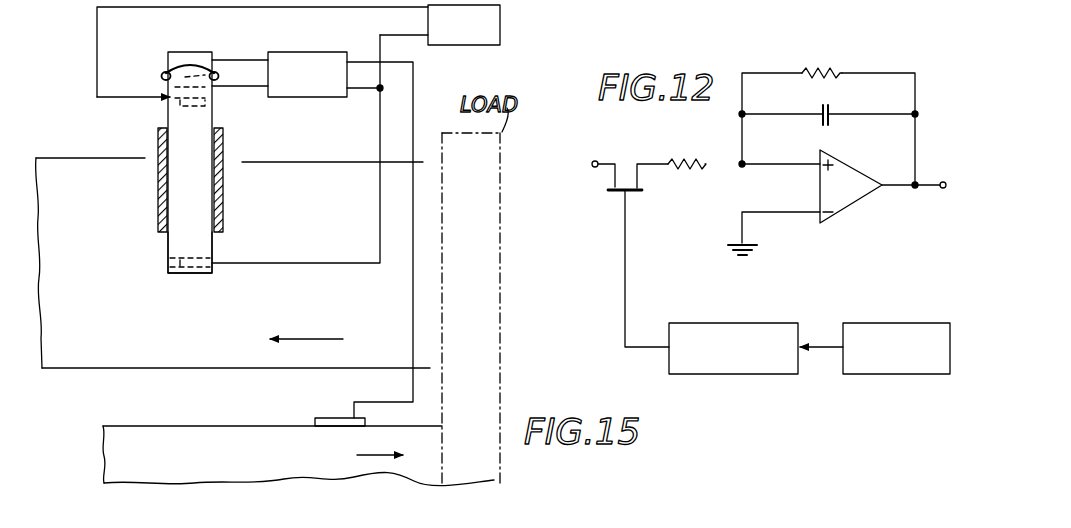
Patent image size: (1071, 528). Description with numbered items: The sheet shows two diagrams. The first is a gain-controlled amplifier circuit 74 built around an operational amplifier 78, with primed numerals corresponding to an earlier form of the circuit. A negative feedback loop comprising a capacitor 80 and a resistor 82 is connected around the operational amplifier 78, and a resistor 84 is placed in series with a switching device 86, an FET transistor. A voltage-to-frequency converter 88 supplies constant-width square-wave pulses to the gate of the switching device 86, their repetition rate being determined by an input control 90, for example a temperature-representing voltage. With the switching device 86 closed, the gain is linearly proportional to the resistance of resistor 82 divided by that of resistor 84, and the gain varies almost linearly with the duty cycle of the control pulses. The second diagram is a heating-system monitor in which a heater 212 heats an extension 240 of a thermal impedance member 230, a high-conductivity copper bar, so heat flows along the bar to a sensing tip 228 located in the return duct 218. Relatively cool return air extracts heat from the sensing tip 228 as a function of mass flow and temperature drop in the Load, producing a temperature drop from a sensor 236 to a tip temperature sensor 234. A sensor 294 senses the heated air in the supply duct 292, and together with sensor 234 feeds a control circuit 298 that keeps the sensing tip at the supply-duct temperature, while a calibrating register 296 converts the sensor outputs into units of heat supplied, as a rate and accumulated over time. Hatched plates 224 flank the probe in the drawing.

In FIG. 15, the duct 218 is at (75, 140).
In FIG. 15, the extension 240 is at (204, 52).
In FIG. 15, the heater 212 is at (166, 72).
In FIG. 15, the sensor 236 is at (166, 118).
In FIG. 15, the left plate 224 is at (158, 153).
In FIG. 15, the thermal impedance member 230 is at (203, 134).
In FIG. 15, the sensing tip 228 is at (168, 246).
In FIG. 15, the temperature sensor 234 is at (180, 273).
In FIG. 15, the control circuit 298 is at (318, 40).
In FIG. 15, the register 296 is at (442, 47).
In FIG. 15, the supply duct 292 is at (186, 408).
In FIG. 15, the sensor 294 is at (321, 418).
In FIG. 12, the switching device 86 is at (645, 177).
In FIG. 12, the resistor 84 is at (700, 159).
In FIG. 12, the operational amplifier 78 is at (848, 208).
In FIG. 12, the resistor 82 is at (821, 72).
In FIG. 12, the capacitor 80 is at (829, 99).
In FIG. 12, the circuit 74 is at (931, 102).
In FIG. 12, the voltage-to-frequency converter 88 is at (745, 306).
In FIG. 12, the input control 90 is at (906, 308).